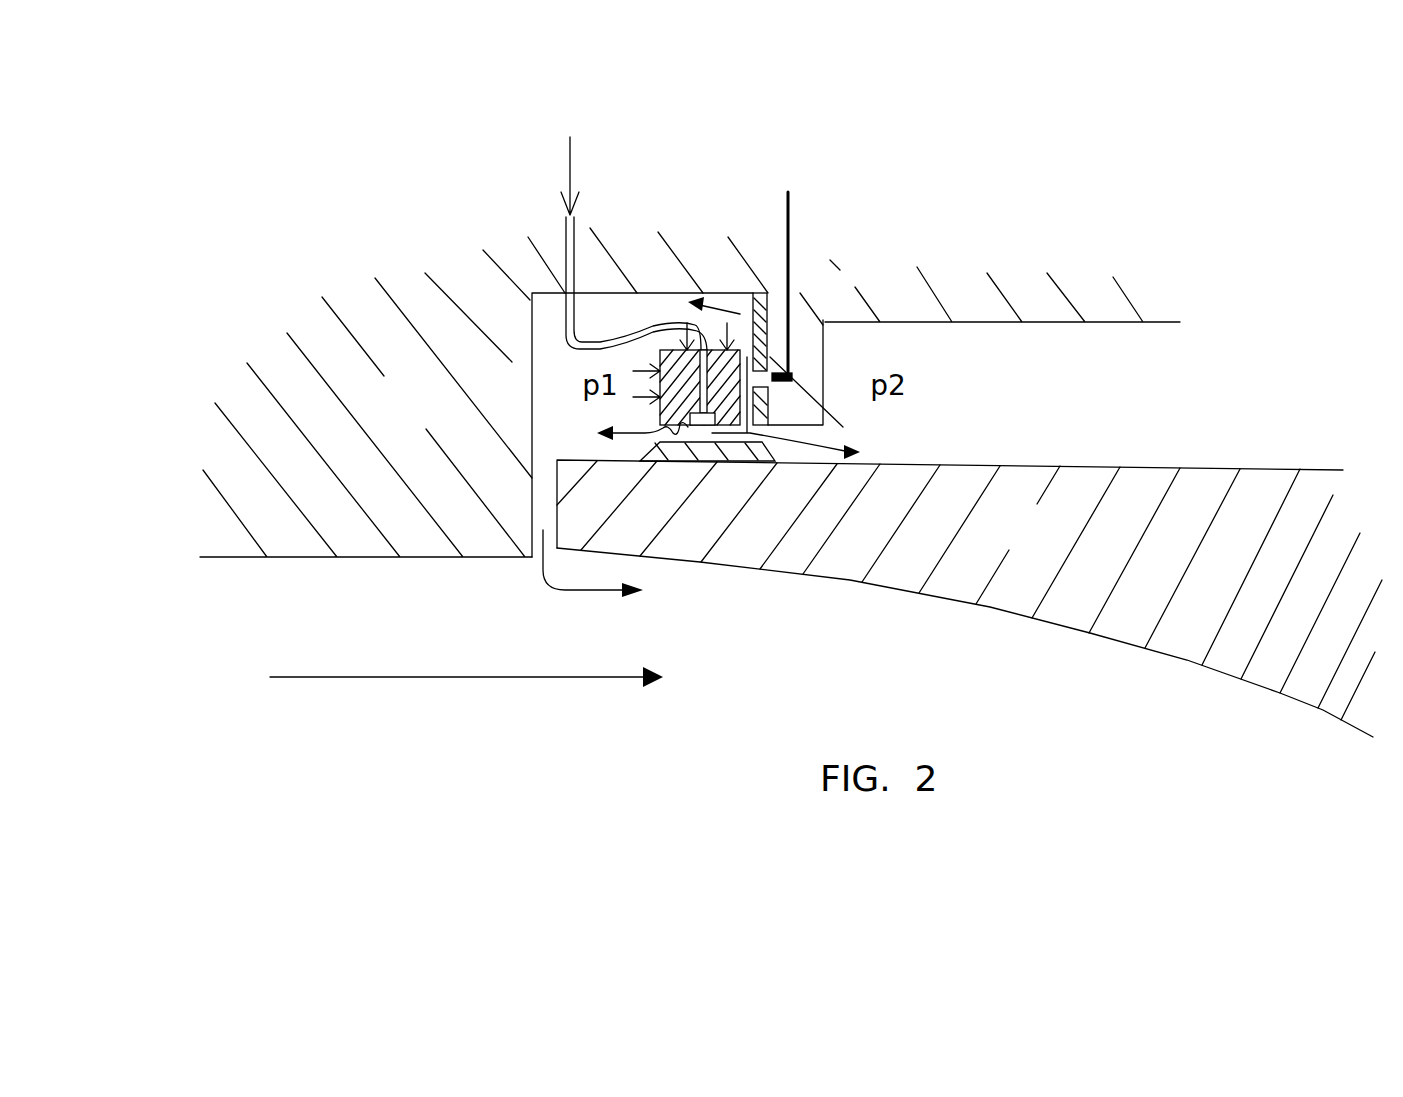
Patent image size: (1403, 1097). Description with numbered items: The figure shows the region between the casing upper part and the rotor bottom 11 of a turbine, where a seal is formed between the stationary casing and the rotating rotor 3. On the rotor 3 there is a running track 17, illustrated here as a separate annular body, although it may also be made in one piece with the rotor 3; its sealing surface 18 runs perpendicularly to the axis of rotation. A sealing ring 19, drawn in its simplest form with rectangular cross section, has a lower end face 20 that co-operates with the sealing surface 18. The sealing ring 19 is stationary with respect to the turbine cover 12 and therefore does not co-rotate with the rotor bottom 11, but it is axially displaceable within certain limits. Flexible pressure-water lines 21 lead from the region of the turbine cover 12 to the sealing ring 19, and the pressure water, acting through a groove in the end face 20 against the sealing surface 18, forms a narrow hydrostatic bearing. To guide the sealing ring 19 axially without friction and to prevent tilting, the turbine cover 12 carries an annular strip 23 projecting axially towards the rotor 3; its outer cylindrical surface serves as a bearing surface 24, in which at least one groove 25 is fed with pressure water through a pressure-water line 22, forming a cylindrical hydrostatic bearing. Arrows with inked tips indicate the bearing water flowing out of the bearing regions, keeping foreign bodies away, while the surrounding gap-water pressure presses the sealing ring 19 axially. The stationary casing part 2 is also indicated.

The stator / housing part 2 is at (953, 259).
The rotor 3 is at (910, 522).
The rotor bottom 11 is at (969, 590).
The turbine cover 12 is at (484, 392).
The running track 17 is at (668, 450).
The sealing surface 18 is at (733, 447).
The sealing ring 19 is at (672, 393).
The end face 20 is at (660, 430).
The pressure-water line 21 is at (618, 338).
The pressure-water line 22 is at (792, 197).
The annular strip 23 is at (790, 400).
The bearing surface 24 is at (750, 362).
The groove 25 is at (762, 390).